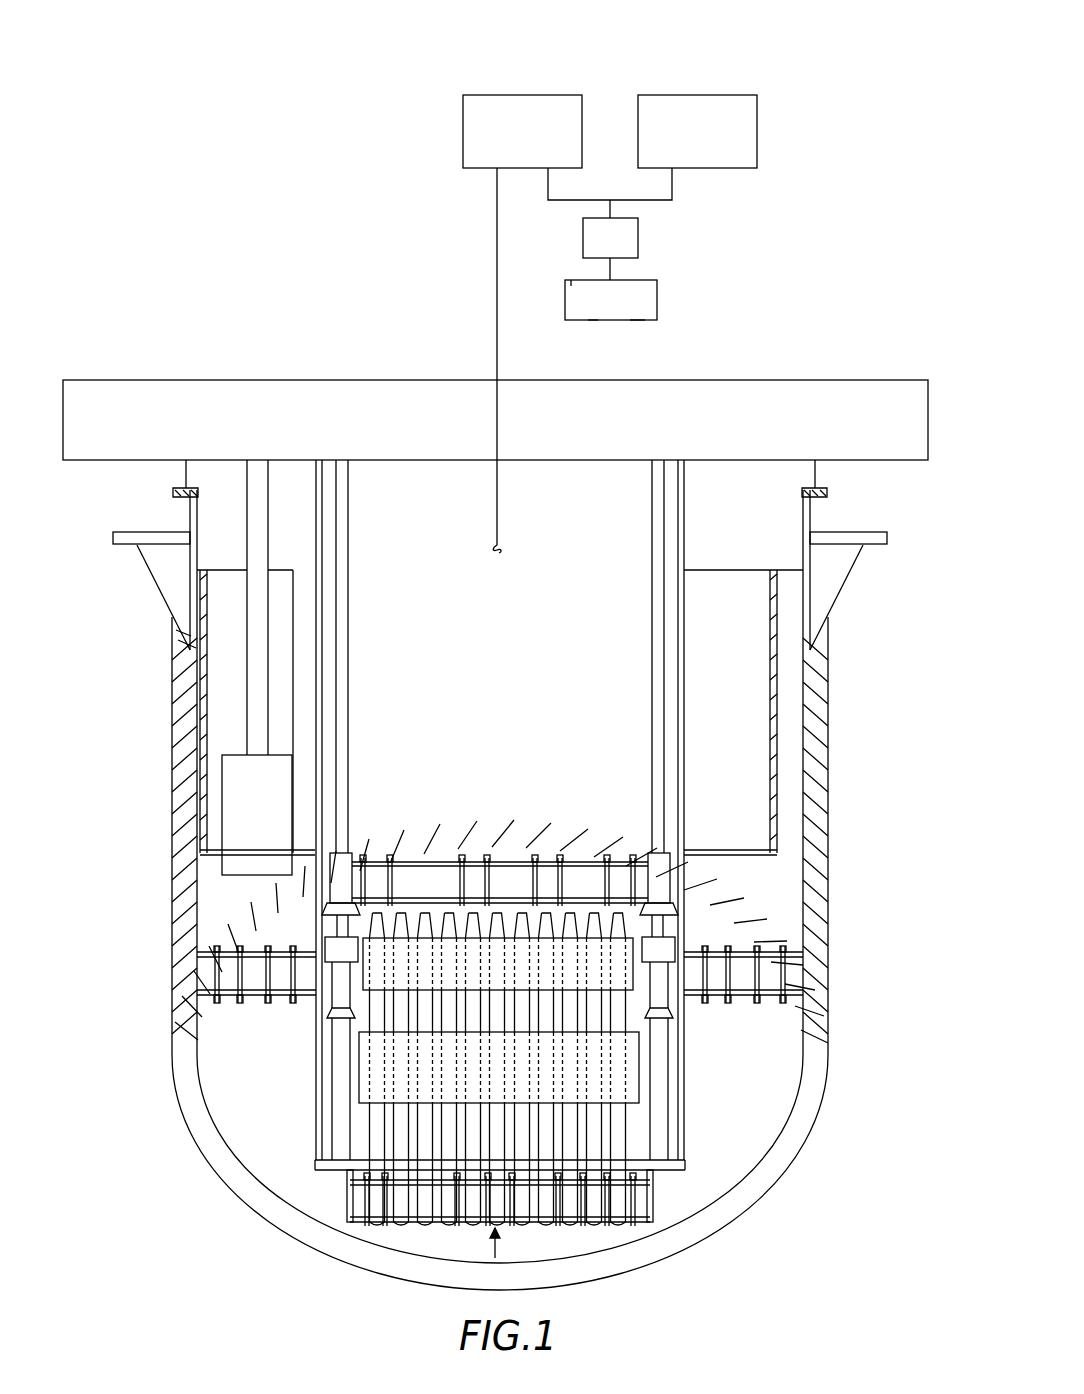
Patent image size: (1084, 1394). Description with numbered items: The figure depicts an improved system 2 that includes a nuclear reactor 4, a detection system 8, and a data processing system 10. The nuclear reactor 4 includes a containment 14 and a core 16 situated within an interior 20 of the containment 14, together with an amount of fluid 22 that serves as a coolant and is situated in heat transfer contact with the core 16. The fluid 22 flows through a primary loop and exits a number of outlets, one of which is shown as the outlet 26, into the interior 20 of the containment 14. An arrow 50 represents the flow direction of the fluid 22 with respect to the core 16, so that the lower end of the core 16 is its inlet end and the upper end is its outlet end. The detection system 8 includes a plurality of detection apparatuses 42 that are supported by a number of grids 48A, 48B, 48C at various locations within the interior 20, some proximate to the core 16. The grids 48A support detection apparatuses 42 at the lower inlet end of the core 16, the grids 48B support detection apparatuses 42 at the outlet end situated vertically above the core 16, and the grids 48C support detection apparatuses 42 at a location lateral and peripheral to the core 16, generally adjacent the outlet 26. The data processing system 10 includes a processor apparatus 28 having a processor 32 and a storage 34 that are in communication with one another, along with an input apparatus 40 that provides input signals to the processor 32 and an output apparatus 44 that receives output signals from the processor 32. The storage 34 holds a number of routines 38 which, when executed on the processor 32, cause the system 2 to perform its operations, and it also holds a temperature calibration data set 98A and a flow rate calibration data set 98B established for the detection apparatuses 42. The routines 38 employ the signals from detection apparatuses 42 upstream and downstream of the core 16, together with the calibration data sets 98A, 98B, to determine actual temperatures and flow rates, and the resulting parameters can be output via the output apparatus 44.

The system 2 is at (338, 228).
The nuclear reactor 4 is at (190, 650).
The detection system 8 is at (388, 1244).
The data processing system 10 is at (748, 222).
The containment 14 is at (822, 672).
The core 16 is at (650, 1115).
The interior 20 is at (206, 1152).
The fluid 22 is at (224, 1068).
The outlet 26 is at (266, 878).
The processor apparatus 28 is at (703, 265).
The processor 32 is at (638, 232).
The storage 34 is at (657, 302).
The routines 38 is at (640, 316).
The input apparatus 40 is at (463, 130).
The detection apparatuses 42 is at (400, 872).
The output apparatus 44 is at (725, 95).
The grids 48A is at (622, 1184).
The grids 48B is at (432, 862).
The grids 48C is at (742, 1000).
The arrow 50 is at (495, 1258).
The temperature calibration data set 98A is at (571, 280).
The flow rate calibration data set 98B is at (592, 318).